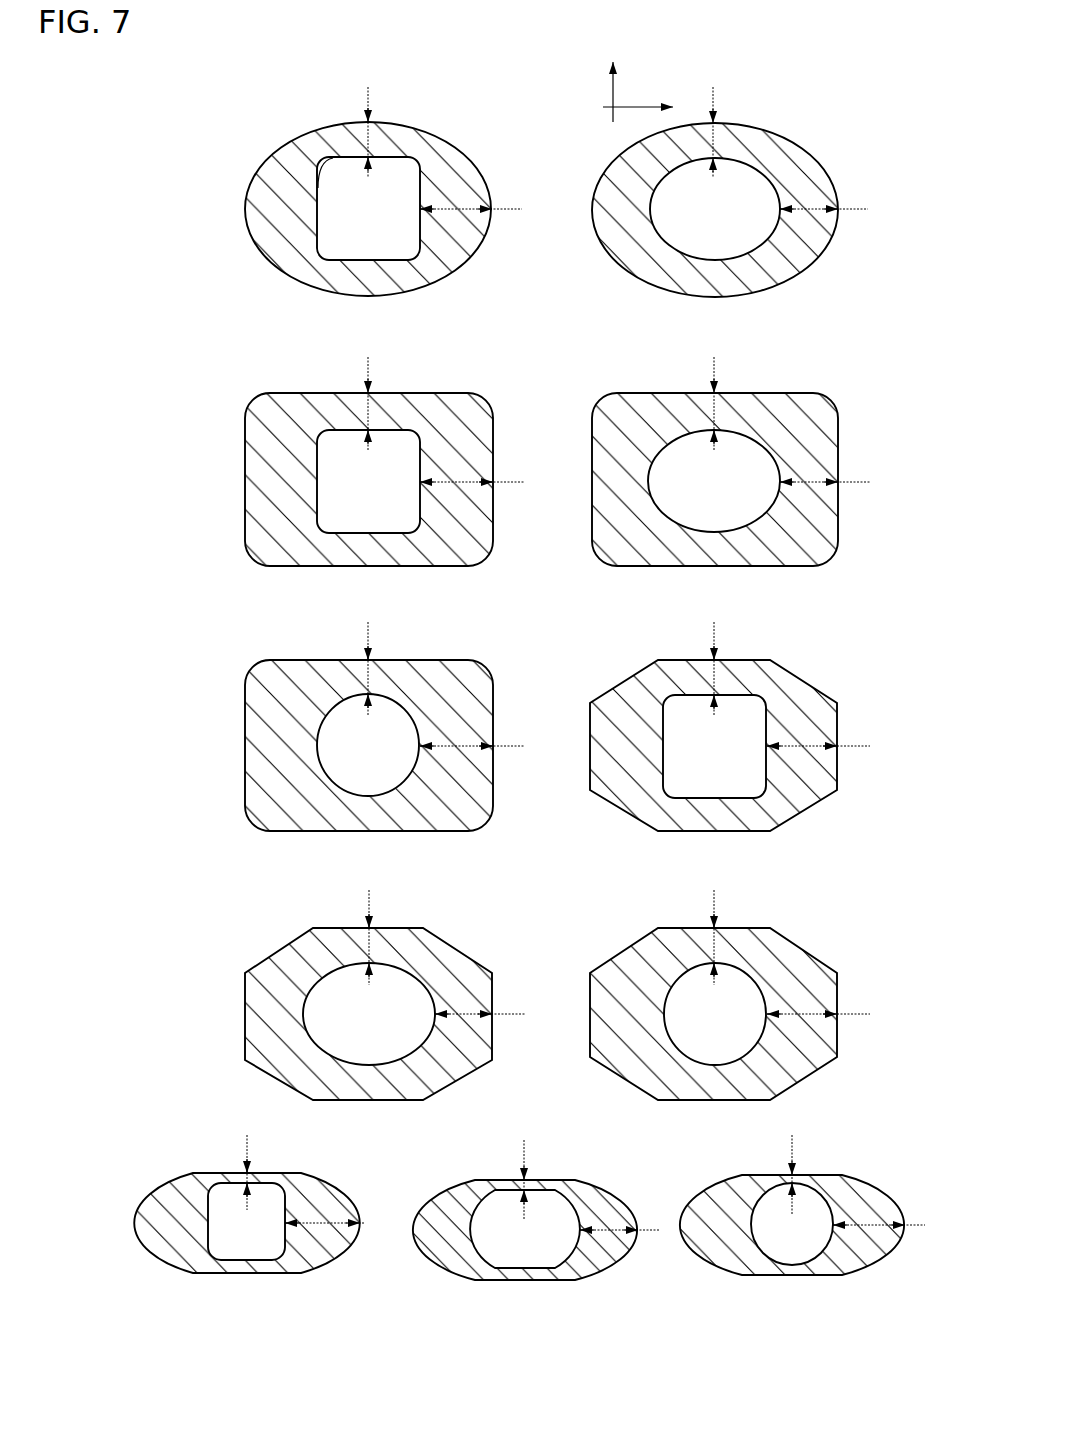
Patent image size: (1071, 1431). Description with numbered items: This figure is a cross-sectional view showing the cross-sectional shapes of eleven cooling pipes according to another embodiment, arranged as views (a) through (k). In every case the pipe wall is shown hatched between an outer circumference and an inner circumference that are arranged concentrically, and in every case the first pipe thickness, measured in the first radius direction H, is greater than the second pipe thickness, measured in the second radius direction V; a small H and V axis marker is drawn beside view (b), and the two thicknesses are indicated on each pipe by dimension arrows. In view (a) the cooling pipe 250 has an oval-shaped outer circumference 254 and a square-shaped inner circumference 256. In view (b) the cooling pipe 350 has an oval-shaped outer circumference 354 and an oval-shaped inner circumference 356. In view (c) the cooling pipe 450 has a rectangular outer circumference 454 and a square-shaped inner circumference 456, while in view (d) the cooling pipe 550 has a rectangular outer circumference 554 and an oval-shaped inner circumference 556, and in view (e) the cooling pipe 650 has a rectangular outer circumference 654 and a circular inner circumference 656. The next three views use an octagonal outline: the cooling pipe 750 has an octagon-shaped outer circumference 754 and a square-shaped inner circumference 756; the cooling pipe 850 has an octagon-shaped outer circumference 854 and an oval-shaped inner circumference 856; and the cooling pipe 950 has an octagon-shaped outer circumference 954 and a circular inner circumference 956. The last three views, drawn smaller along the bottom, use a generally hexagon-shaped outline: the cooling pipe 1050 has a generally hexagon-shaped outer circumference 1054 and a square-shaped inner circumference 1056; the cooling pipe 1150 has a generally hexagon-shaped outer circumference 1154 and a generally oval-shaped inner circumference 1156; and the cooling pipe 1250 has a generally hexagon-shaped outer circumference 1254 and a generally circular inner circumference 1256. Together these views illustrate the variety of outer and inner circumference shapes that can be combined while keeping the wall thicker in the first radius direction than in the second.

The cooling pipe 250 is at (361, 216).
The outer circumference 254 is at (437, 140).
The inner circumference 256 is at (323, 158).
The cooling pipe 350 is at (737, 198).
The outer circumference 354 is at (813, 242).
The inner circumference 356 is at (667, 183).
The cooling pipe 450 is at (345, 478).
The outer circumference 454 is at (437, 393).
The inner circumference 456 is at (417, 467).
The cooling pipe 550 is at (708, 476).
The outer circumference 554 is at (828, 397).
The inner circumference 556 is at (758, 443).
The cooling pipe 650 is at (358, 744).
The outer circumference 654 is at (478, 665).
The inner circumference 656 is at (408, 712).
The cooling pipe 750 is at (720, 739).
The outer circumference 754 is at (793, 677).
The inner circumference 756 is at (760, 728).
The cooling pipe 850 is at (355, 1008).
The outer circumference 854 is at (448, 938).
The inner circumference 856 is at (402, 973).
The cooling pipe 950 is at (711, 1015).
The outer circumference 954 is at (802, 948).
The inner circumference 956 is at (748, 975).
The cooling pipe 1050 is at (249, 1206).
The outer circumference 1054 is at (192, 1177).
The inner circumference 1056 is at (267, 1257).
The cooling pipe 1150 is at (539, 1223).
The outer circumference 1154 is at (458, 1182).
The inner circumference 1156 is at (540, 1265).
The cooling pipe 1250 is at (810, 1215).
The outer circumference 1254 is at (870, 1190).
The inner circumference 1256 is at (812, 1256).